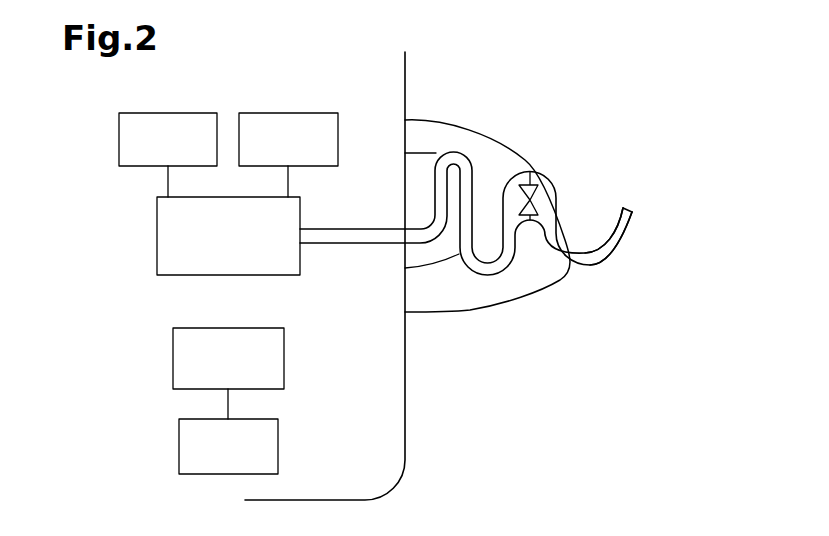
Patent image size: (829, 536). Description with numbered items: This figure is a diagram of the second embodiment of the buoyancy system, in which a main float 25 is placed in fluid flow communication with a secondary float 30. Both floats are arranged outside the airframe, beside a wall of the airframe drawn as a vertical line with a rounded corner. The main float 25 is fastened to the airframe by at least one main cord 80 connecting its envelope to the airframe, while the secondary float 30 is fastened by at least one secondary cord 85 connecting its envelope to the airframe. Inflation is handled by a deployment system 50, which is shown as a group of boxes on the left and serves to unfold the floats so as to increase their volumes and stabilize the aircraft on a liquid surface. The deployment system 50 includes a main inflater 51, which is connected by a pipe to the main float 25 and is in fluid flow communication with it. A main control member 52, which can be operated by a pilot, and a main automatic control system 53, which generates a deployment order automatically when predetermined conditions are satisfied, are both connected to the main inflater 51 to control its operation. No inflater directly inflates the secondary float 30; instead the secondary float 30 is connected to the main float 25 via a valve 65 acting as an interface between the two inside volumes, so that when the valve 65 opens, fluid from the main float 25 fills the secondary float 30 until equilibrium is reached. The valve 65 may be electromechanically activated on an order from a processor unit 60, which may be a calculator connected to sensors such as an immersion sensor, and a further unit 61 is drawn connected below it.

The main float 25 is at (462, 154).
The secondary float 30 is at (629, 232).
The deployment system 50 is at (128, 269).
The main inflater 51 is at (213, 249).
The main control member 52 is at (153, 151).
The main automatic control system 53 is at (273, 151).
The processor unit 60 is at (214, 371).
The unit 61 is at (214, 460).
The valve 65 is at (538, 195).
The main cord 80 is at (425, 153).
The secondary cord 85 is at (527, 158).